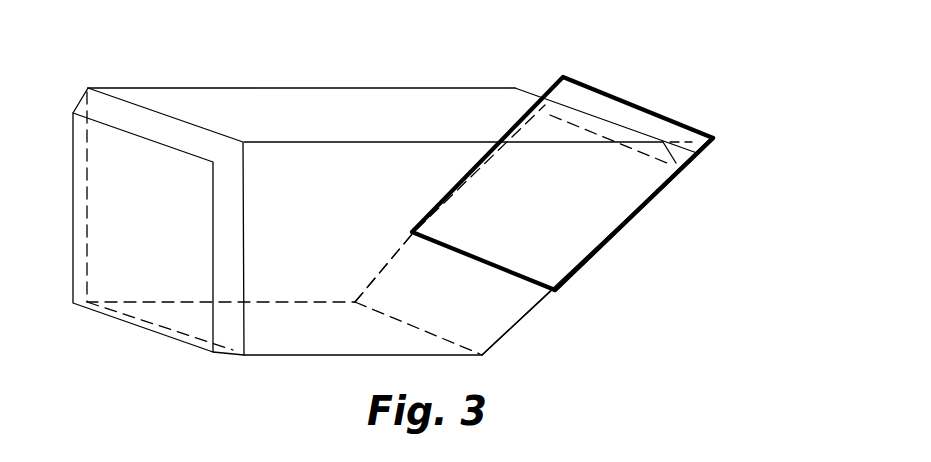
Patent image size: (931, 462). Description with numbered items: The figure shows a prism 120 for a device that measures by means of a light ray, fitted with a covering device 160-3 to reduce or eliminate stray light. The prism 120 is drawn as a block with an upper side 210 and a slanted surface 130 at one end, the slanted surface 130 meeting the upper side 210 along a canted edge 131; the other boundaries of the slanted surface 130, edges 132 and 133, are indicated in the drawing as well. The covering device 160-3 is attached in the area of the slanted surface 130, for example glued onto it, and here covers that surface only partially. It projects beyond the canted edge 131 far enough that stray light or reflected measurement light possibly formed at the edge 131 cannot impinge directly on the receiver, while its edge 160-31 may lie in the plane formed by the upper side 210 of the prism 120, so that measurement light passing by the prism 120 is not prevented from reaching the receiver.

The prism 120 is at (222, 87).
The upper side 210 is at (324, 113).
The slanted surface 130 is at (578, 176).
The canted edge 131 is at (682, 140).
The rear hidden edge of slanted surface 132 is at (378, 278).
The lower edge of slanted surface 133 is at (528, 307).
The covering device 160-3 is at (600, 112).
The edge of covering device 160-31 is at (680, 120).